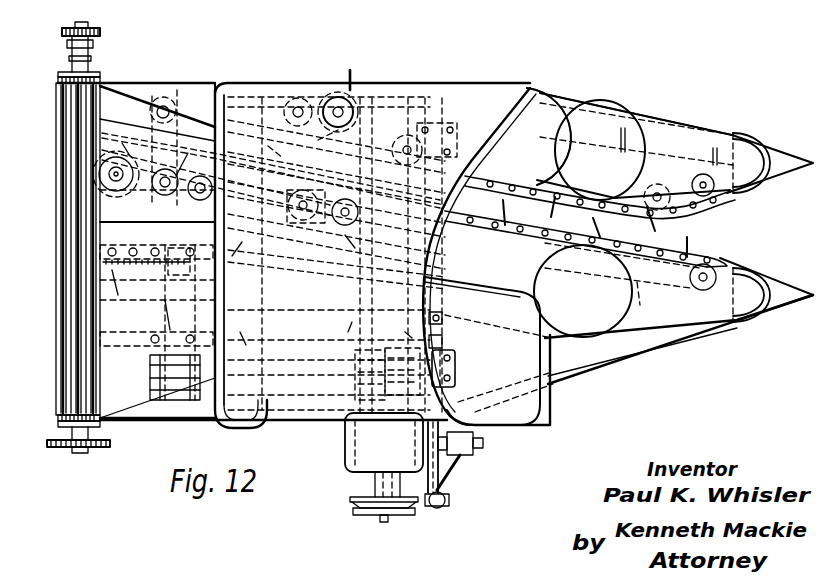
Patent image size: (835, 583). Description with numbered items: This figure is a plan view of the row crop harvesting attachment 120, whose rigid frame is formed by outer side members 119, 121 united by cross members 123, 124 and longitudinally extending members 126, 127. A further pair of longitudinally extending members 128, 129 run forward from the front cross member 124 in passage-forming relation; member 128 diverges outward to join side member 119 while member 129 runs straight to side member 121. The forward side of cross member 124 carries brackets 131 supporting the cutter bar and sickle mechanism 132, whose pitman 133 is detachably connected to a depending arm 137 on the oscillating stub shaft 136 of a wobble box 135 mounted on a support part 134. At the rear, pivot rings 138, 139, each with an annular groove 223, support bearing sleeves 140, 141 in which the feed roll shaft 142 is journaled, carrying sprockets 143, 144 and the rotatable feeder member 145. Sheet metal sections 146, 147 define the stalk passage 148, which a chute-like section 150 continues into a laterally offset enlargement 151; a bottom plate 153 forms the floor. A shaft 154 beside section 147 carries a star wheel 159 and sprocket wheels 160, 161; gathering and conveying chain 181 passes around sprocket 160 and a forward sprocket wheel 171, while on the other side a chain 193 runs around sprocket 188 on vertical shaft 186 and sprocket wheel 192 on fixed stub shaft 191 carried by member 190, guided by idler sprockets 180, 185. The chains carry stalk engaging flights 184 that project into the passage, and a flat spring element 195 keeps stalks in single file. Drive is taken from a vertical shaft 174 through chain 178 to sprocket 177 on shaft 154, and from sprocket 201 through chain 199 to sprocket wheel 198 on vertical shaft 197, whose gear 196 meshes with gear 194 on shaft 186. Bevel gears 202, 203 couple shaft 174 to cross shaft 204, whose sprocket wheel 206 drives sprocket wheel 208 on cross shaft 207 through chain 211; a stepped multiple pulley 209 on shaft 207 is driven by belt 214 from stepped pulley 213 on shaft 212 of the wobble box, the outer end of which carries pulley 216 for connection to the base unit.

The outer side member 119 is at (668, 128).
The row crop harvesting attachment 120 is at (313, 319).
The outer side member 121 is at (668, 340).
The cross member 123 is at (336, 331).
The front cross member 124 is at (393, 332).
The longitudinally extending member 126 is at (243, 330).
The longitudinally extending member 127 is at (242, 250).
The longitudinally extending member 128 is at (770, 169).
The longitudinally extending member 129 is at (712, 290).
The brackets 131 is at (456, 374).
The cutter bar and sickle mechanism 132 is at (455, 305).
The pitman 133 is at (435, 472).
The support part 134 is at (368, 474).
The wobble box 135 is at (345, 438).
The oscillating stub shaft 136 is at (484, 443).
The depending arm 137 is at (455, 476).
The pivot ring 138 is at (92, 74).
The pivot ring 139 is at (102, 427).
The bearing sleeve 140 is at (68, 73).
The bearing sleeve 141 is at (62, 434).
The feed roll shaft 142 is at (82, 454).
The sprocket 143 is at (52, 448).
The sprocket 144 is at (70, 30).
The feeder member 145 is at (58, 292).
The sheet metal section 146 is at (600, 120).
The sheet metal section 147 is at (640, 345).
The passage 148 is at (700, 240).
The chute-like sheet metal section 150 is at (548, 420).
The laterally offset enlargement 151 is at (522, 346).
The bottom plate 153 is at (266, 142).
The shaft 154 is at (358, 214).
The star wheel 159 is at (378, 253).
The sprocket wheel 160 is at (300, 220).
The sprocket wheel 161 is at (242, 240).
The sprocket wheel 171 is at (725, 272).
The vertical shaft 174 is at (108, 174).
The sprocket 177 is at (198, 200).
The chain 178 is at (156, 243).
The idler sprocket 180 is at (402, 146).
The stalk gathering and conveying chain 181 is at (583, 291).
The stalk engaging flights 184 is at (658, 230).
The idler sprocket 185 is at (600, 150).
The vertical shaft 186 is at (338, 96).
The sprocket 188 is at (311, 144).
The longitudinally extending member 190 is at (708, 208).
The fixed stub shaft 191 is at (723, 183).
The sprocket wheel 192 is at (696, 190).
The gathering and conveying chain 193 is at (541, 136).
The gear 194 is at (342, 108).
The flat spring element 195 is at (551, 217).
The gear 196 is at (296, 98).
The vertical shaft 197 is at (202, 105).
The sprocket wheel 198 is at (166, 97).
The chain 199 is at (150, 112).
The sprocket 201 is at (188, 156).
The bevel gear 202 is at (124, 141).
The bevel gear 203 is at (160, 196).
The cross shaft 204 is at (121, 298).
The sprocket wheel 206 is at (122, 275).
The cross shaft 207 is at (166, 326).
The sprocket wheel 208 is at (186, 278).
The stepped multiple pulley 209 is at (150, 378).
The chain 211 is at (182, 298).
The shaft 212 is at (385, 522).
The stepped pulley 213 is at (370, 390).
The belt 214 is at (355, 370).
The pulley 216 is at (360, 514).
The annular groove 223 is at (58, 420).